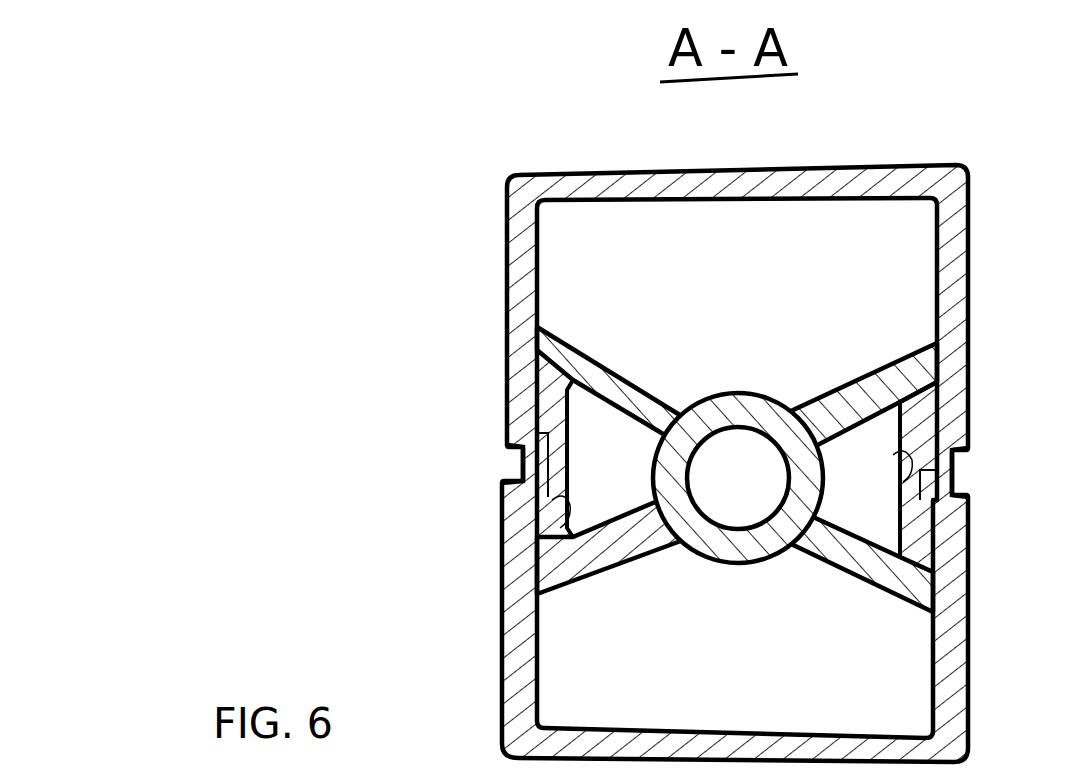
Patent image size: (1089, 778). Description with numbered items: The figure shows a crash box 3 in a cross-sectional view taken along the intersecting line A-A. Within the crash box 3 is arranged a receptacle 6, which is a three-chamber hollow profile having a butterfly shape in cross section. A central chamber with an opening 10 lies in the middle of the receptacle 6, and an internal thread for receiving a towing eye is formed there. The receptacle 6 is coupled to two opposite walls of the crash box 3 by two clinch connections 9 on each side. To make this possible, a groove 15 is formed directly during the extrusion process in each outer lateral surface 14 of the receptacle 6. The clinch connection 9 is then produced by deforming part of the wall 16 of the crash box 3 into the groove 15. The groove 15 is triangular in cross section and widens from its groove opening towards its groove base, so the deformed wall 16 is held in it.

The crash box 3 is at (906, 166).
The receptacle 6 is at (940, 365).
The clinch connection 9 is at (514, 461).
The opening 10 is at (725, 499).
The outer lateral surface 14 is at (538, 392).
The groove 15 is at (548, 498).
The wall 16 is at (935, 691).